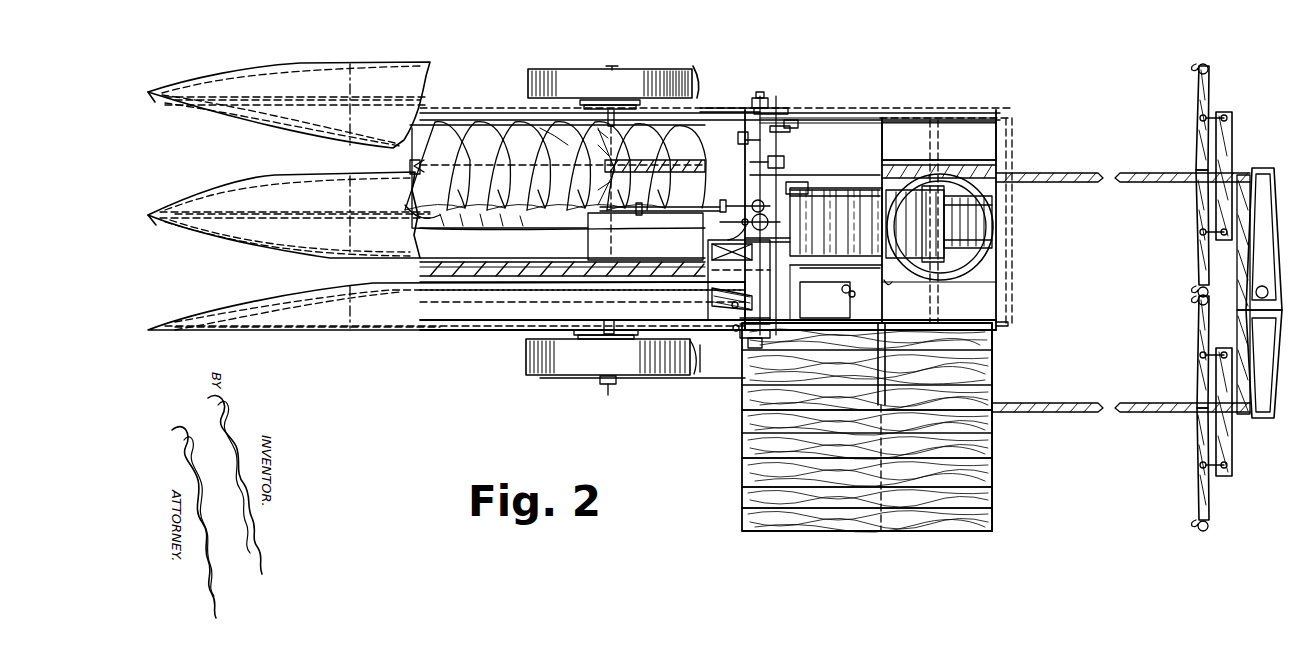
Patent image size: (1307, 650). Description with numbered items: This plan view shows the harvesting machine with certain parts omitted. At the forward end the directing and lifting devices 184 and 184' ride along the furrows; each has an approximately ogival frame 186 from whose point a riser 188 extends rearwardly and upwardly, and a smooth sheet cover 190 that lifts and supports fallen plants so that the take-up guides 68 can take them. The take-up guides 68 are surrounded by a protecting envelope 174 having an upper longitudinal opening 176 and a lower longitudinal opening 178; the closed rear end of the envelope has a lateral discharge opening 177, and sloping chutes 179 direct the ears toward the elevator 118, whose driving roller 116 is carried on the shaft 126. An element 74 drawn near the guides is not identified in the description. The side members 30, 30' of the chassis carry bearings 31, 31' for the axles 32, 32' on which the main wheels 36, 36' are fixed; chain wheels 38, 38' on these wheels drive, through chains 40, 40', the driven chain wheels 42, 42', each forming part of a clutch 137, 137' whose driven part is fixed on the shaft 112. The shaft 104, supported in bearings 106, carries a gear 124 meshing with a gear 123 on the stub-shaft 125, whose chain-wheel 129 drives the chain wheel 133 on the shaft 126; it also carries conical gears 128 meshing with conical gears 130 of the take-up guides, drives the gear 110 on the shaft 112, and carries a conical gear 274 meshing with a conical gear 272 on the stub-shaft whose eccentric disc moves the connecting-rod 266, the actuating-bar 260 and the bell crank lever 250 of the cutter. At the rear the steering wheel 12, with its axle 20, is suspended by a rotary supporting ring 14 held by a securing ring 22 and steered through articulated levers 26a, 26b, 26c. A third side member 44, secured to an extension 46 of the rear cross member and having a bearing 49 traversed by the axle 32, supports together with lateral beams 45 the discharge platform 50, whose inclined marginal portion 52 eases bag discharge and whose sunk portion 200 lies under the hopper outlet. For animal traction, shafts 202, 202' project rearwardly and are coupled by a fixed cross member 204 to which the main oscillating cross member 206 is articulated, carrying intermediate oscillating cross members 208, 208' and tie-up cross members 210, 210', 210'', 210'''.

The directing and lifting device 184 is at (289, 147).
The directing and lifting device 184' is at (446, 326).
The riser 188 is at (298, 96).
The cover 190 is at (156, 100).
The frame 186 is at (250, 126).
The take-up guide 68 is at (394, 274).
The lower longitudinal opening 178 is at (552, 136).
The bearing bracket 74 is at (424, 188).
The main wheel 36' is at (610, 67).
The chain wheel 38' is at (610, 70).
The axle 32' is at (640, 66).
The bearing 31' is at (638, 153).
The chain 40' is at (703, 69).
The bearing 106 is at (756, 108).
The clutch 137' is at (737, 85).
The gear 124 is at (762, 98).
The driven chain wheel 42' is at (792, 99).
The stub-shaft 125 is at (780, 120).
The gear 123 is at (798, 122).
The side member 30' is at (878, 110).
The driven chain wheel 133 is at (835, 120).
The chain-wheel 129 is at (745, 138).
The conical gear 128 is at (792, 154).
The conical gear 130 is at (762, 180).
The shaft 104 is at (800, 172).
The conical gear 274 is at (768, 216).
The conical gear 272 is at (805, 196).
The gear 110 is at (782, 228).
The driving roller 116 is at (848, 258).
The shaft 126 is at (806, 300).
The shaft 112 is at (790, 284).
The articulated lever 26b is at (856, 296).
The articulated lever 26a is at (890, 284).
The axle 20 is at (932, 294).
The side member 30 is at (939, 298).
The securing ring 22 is at (990, 244).
The rotary supporting ring 14 is at (985, 262).
The elevator 118 is at (945, 198).
The steering wheel 12 is at (968, 222).
The bell crank lever 250 is at (561, 236).
The actuating-bar 260 is at (660, 201).
The connecting-rod 266 is at (736, 206).
The sloping chute 179 is at (735, 224).
The lateral discharge opening 177 is at (708, 244).
The protecting envelope 174 is at (562, 272).
The upper longitudinal opening 176 is at (508, 272).
The bearing 31 is at (591, 312).
The chain wheel 38 is at (583, 370).
The main wheel 36 is at (608, 357).
The bearing 49 is at (602, 382).
The axle 32 is at (609, 402).
The third side member 44 is at (680, 380).
The chain 40 is at (699, 357).
The articulated lever 26c is at (738, 332).
The driven chain wheel 42 is at (738, 373).
The clutch 137 is at (741, 378).
The sunk portion 200 is at (994, 348).
The extension 46 is at (994, 378).
The laterally extending beam 45 is at (742, 436).
The discharge platform 50 is at (742, 512).
The free longitudinal marginal portion 52 is at (800, 500).
The shaft 202' is at (1123, 159).
The shaft 202 is at (1121, 421).
The tie-up cross member 210''' is at (1226, 117).
The tie-up cross member 210'' is at (1182, 233).
The intermediate oscillating cross member 208' is at (1242, 176).
The fixed cross member 204 is at (1265, 272).
The main oscillating cross member 206 is at (1244, 332).
The tie-up cross member 210' is at (1180, 351).
The tie-up cross member 210 is at (1180, 469).
The intermediate oscillating cross member 208 is at (1240, 412).